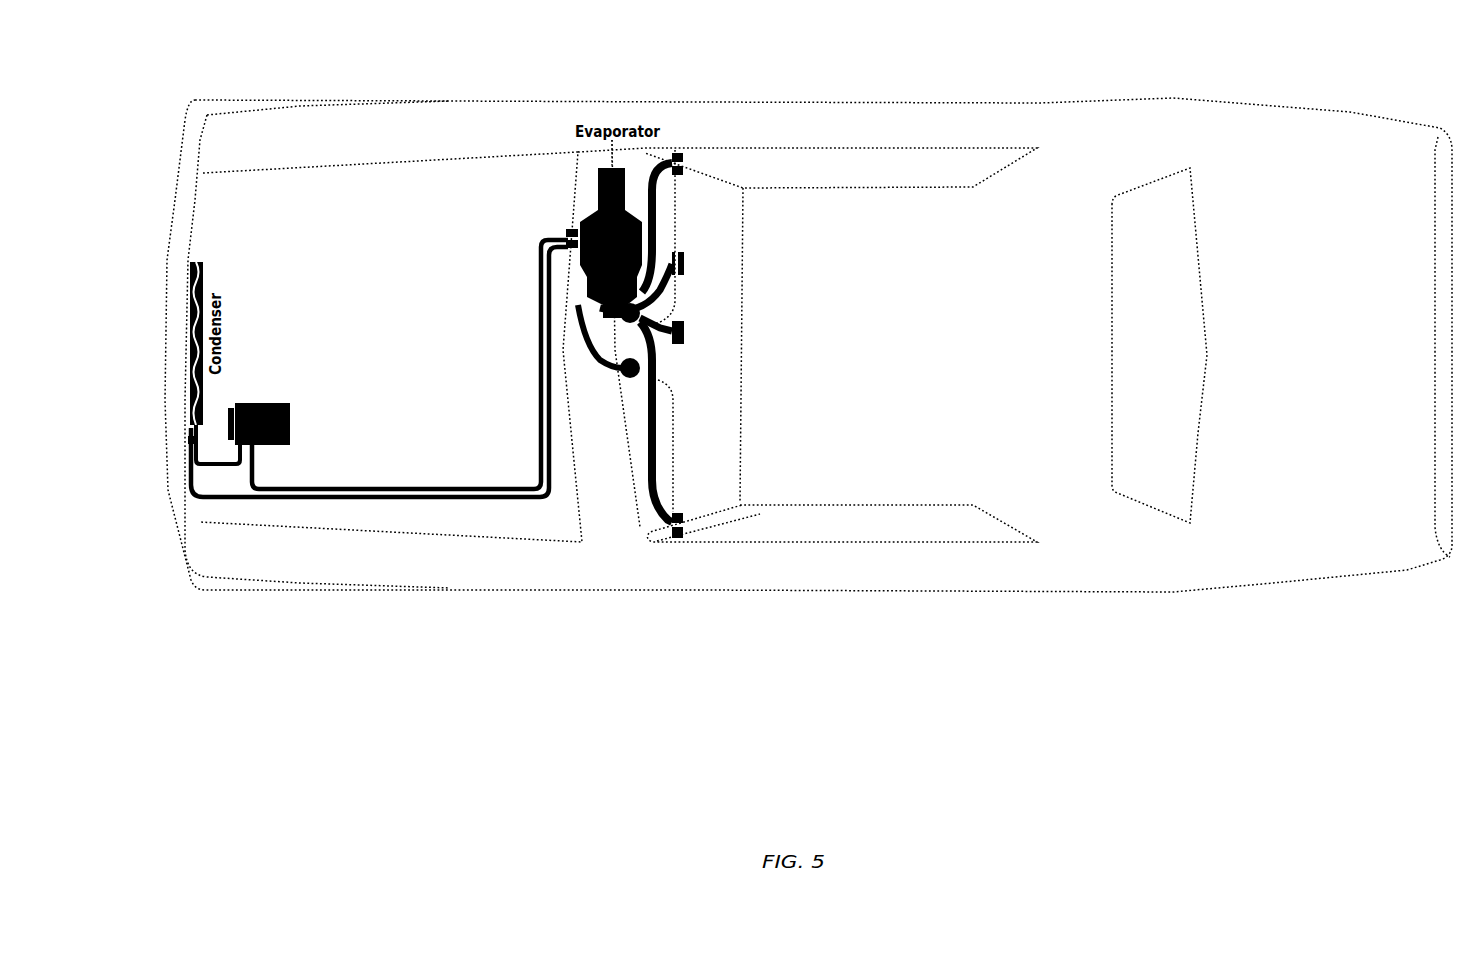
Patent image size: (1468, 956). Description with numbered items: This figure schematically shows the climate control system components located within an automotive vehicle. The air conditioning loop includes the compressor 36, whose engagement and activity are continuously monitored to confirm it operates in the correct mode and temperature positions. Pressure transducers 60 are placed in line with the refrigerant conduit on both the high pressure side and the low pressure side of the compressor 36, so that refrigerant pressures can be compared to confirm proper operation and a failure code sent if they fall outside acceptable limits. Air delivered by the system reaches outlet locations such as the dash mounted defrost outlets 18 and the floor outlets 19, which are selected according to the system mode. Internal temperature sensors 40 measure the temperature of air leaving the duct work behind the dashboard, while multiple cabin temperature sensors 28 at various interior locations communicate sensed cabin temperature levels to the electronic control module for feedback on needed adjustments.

The pressure transducer 60 is at (167, 640).
The internal temperature sensor 40 is at (618, 310).
The temperature sensor 28 is at (1178, 186).
The compressor 36 is at (320, 424).
The floor outlet 19 is at (699, 264).
The dash mounted defrost outlet 18 is at (699, 332).